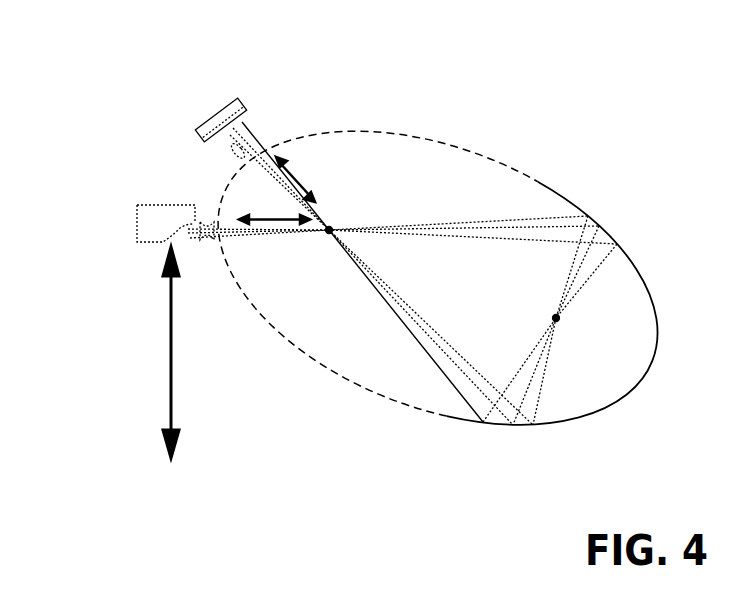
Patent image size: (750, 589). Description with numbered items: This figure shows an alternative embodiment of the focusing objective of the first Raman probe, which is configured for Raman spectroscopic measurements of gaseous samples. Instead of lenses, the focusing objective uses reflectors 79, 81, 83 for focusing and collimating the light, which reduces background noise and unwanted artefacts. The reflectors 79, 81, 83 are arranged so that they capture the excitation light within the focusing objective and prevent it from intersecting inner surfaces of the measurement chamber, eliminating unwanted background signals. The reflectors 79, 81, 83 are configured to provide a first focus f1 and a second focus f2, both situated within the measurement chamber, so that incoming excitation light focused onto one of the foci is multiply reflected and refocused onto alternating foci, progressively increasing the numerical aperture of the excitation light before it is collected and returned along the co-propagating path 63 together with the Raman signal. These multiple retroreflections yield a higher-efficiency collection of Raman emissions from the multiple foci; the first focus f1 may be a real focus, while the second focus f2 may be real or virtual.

The co-propagating path 63 is at (170, 333).
The reflector 79 is at (162, 222).
The reflector 81 is at (643, 282).
The reflector 83 is at (213, 123).
The first focus f1 is at (333, 223).
The second focus f2 is at (562, 323).